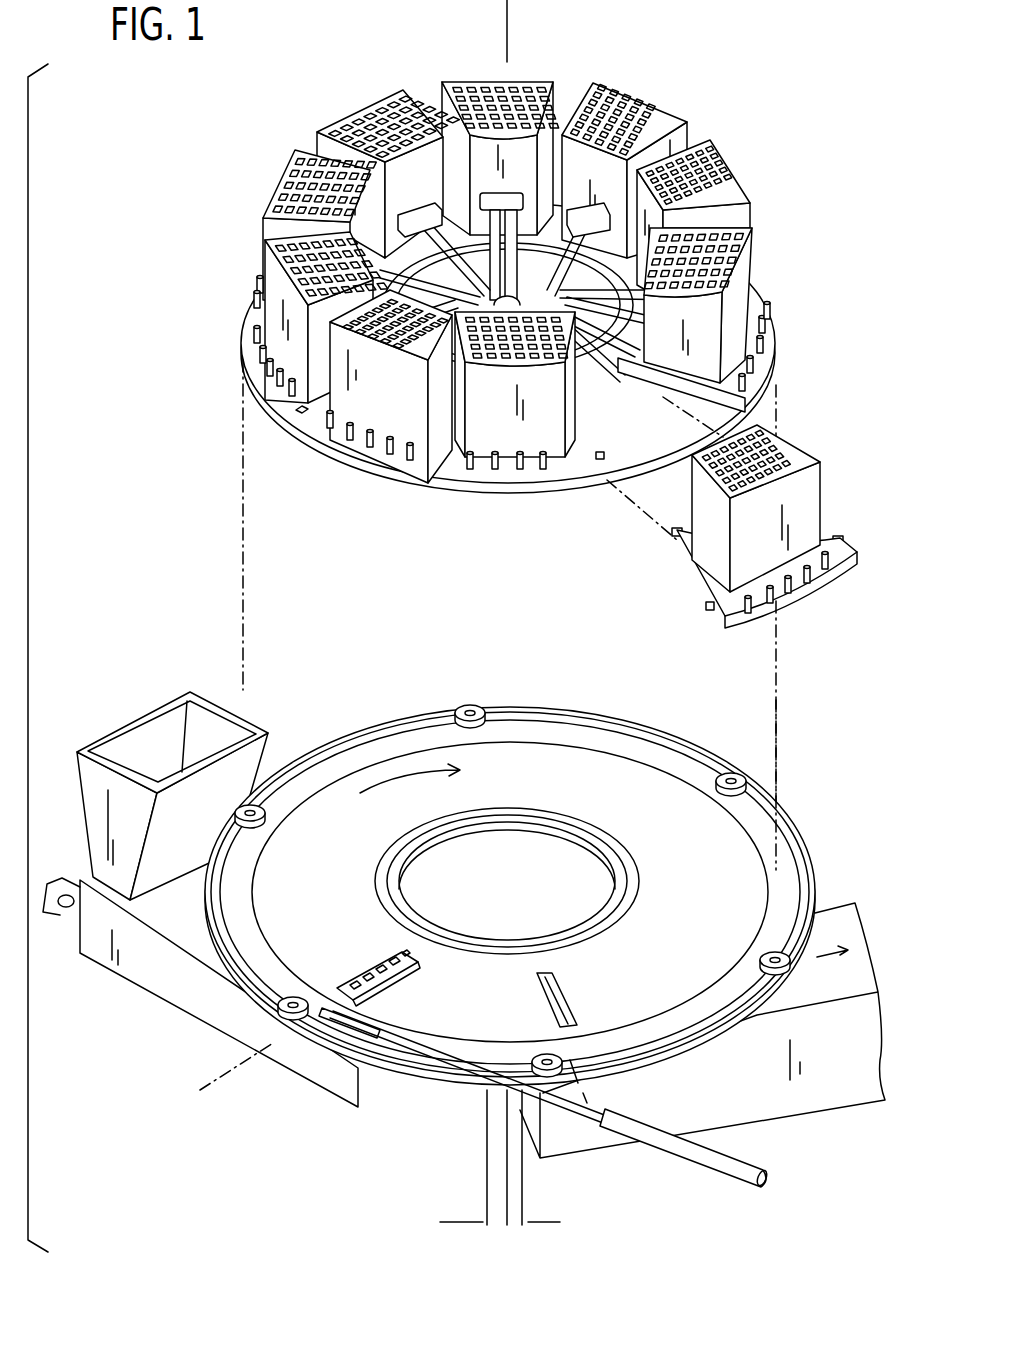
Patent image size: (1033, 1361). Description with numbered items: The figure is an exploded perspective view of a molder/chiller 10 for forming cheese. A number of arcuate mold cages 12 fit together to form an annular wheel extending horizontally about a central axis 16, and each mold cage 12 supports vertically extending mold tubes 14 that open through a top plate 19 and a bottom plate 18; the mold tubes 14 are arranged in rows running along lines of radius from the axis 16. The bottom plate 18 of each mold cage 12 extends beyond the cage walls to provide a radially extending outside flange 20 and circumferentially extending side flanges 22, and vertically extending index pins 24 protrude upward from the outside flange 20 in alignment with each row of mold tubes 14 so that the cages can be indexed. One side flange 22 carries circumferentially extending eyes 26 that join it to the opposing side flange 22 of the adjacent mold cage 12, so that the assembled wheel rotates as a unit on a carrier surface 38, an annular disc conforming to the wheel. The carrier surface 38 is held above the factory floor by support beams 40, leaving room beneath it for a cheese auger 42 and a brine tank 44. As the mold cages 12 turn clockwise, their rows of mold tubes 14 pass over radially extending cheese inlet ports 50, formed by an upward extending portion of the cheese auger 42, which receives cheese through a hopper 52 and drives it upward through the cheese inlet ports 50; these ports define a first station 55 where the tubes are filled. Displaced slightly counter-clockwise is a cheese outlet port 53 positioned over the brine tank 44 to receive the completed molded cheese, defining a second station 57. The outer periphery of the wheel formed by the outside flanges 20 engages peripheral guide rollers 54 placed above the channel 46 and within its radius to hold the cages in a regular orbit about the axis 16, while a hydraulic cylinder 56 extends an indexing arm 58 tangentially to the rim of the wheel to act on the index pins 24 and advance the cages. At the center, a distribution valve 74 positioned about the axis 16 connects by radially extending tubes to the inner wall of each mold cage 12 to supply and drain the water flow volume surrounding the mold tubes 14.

The molder/chiller 10 is at (767, 68).
The arcuate mold cage 12 is at (506, 191).
The mold tube 14 is at (779, 477).
The central axis 16 is at (512, 27).
The bottom plate 18 is at (857, 548).
The top plate 19 is at (778, 438).
The outside flange 20 is at (248, 343).
The side flange 22 is at (580, 440).
The index pin 24 is at (397, 437).
The eye 26 is at (712, 613).
The carrier surface 38 is at (373, 777).
The support beam 40 is at (490, 1147).
The cheese auger 42 is at (147, 972).
The brine tank 44 is at (860, 1087).
The channel 46 is at (435, 847).
The cheese inlet port 50 is at (380, 962).
The hopper 52 is at (137, 718).
The cheese outlet port 53 is at (563, 983).
The peripheral guide roller 54 is at (283, 1000).
The first station 55 is at (227, 1073).
The hydraulic cylinder 56 is at (727, 1170).
The second station 57 is at (583, 1093).
The indexing arm 58 is at (440, 1063).
The central distribution valve 74 is at (620, 337).